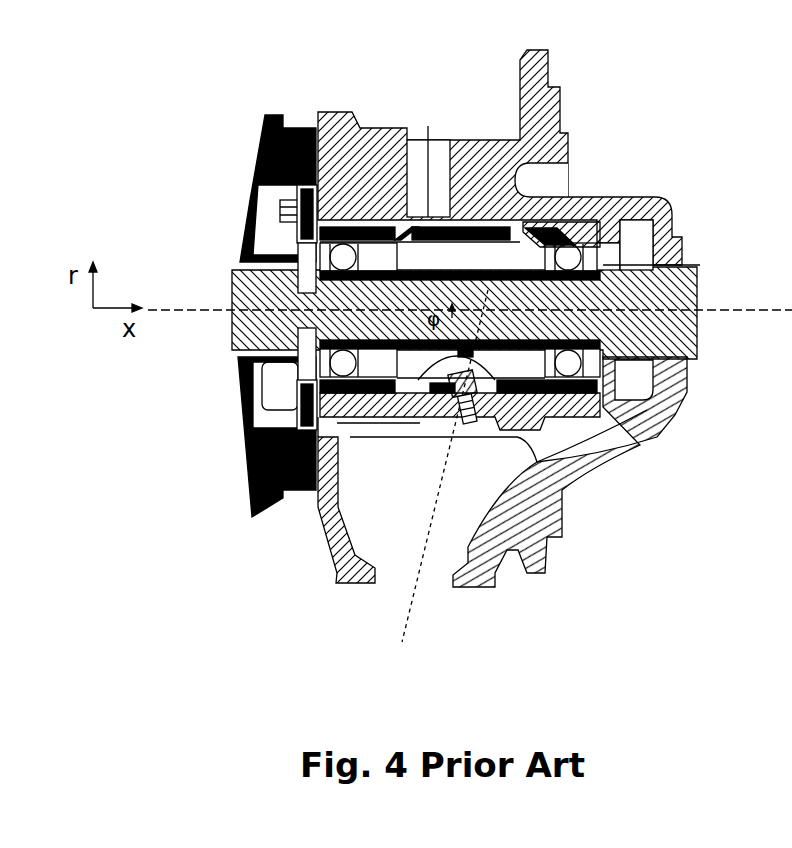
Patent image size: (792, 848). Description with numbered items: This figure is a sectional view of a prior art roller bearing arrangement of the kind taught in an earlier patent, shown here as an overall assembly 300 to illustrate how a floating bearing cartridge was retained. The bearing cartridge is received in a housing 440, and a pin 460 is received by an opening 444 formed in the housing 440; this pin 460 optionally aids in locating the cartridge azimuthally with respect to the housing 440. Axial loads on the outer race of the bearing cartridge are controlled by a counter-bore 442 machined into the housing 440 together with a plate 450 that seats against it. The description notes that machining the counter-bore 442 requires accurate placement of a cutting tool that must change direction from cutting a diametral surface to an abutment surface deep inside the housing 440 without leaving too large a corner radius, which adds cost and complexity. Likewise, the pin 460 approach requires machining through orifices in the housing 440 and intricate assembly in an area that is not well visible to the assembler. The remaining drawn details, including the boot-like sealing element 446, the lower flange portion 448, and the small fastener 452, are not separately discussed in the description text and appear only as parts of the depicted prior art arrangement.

The turbocharger housing 300 is at (603, 398).
The housing 440 is at (583, 198).
The counter-bore 442 is at (597, 253).
The opening 444 is at (441, 412).
The sealing boot 446 is at (313, 180).
The housing flange 448 is at (375, 584).
The plate 450 is at (297, 413).
The screw 452 is at (280, 207).
The pin 460 is at (452, 420).